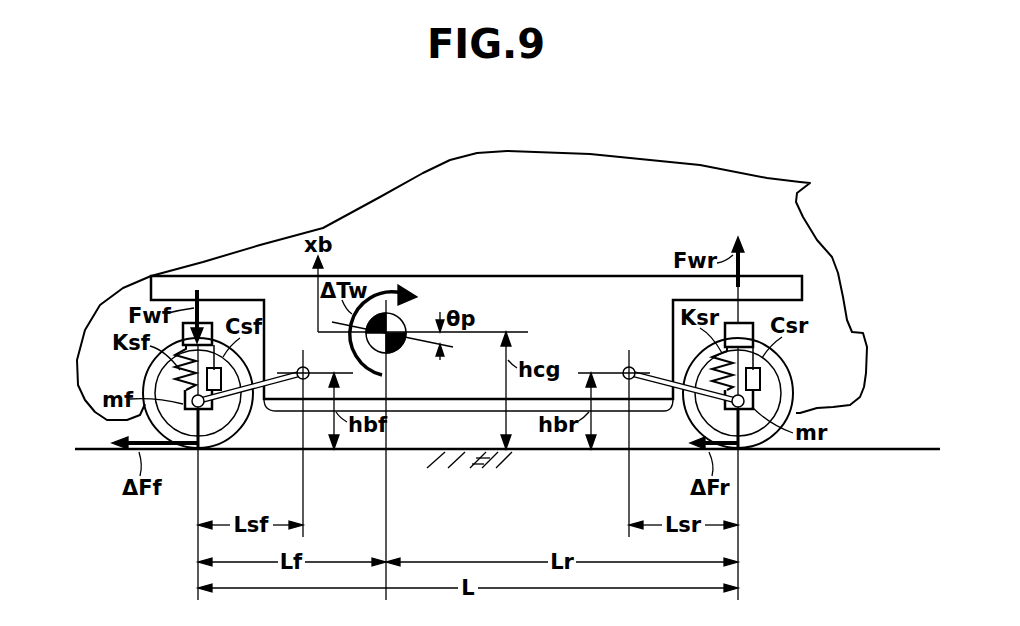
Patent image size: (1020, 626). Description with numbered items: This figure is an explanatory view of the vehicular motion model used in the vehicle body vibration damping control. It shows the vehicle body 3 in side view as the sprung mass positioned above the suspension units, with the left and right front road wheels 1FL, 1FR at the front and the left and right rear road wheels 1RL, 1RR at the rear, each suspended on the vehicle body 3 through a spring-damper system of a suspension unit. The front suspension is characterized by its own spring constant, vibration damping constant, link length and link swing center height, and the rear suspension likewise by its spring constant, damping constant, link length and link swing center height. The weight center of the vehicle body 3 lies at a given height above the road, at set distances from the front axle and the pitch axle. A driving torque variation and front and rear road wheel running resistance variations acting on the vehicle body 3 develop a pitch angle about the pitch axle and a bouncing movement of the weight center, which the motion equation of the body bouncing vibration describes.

The vehicle body 3 is at (378, 195).
The left front road wheel 1FL is at (220, 420).
The right front road wheel 1FR is at (240, 447).
The left rear road wheel 1RL is at (773, 421).
The right rear road wheel 1RR is at (781, 450).